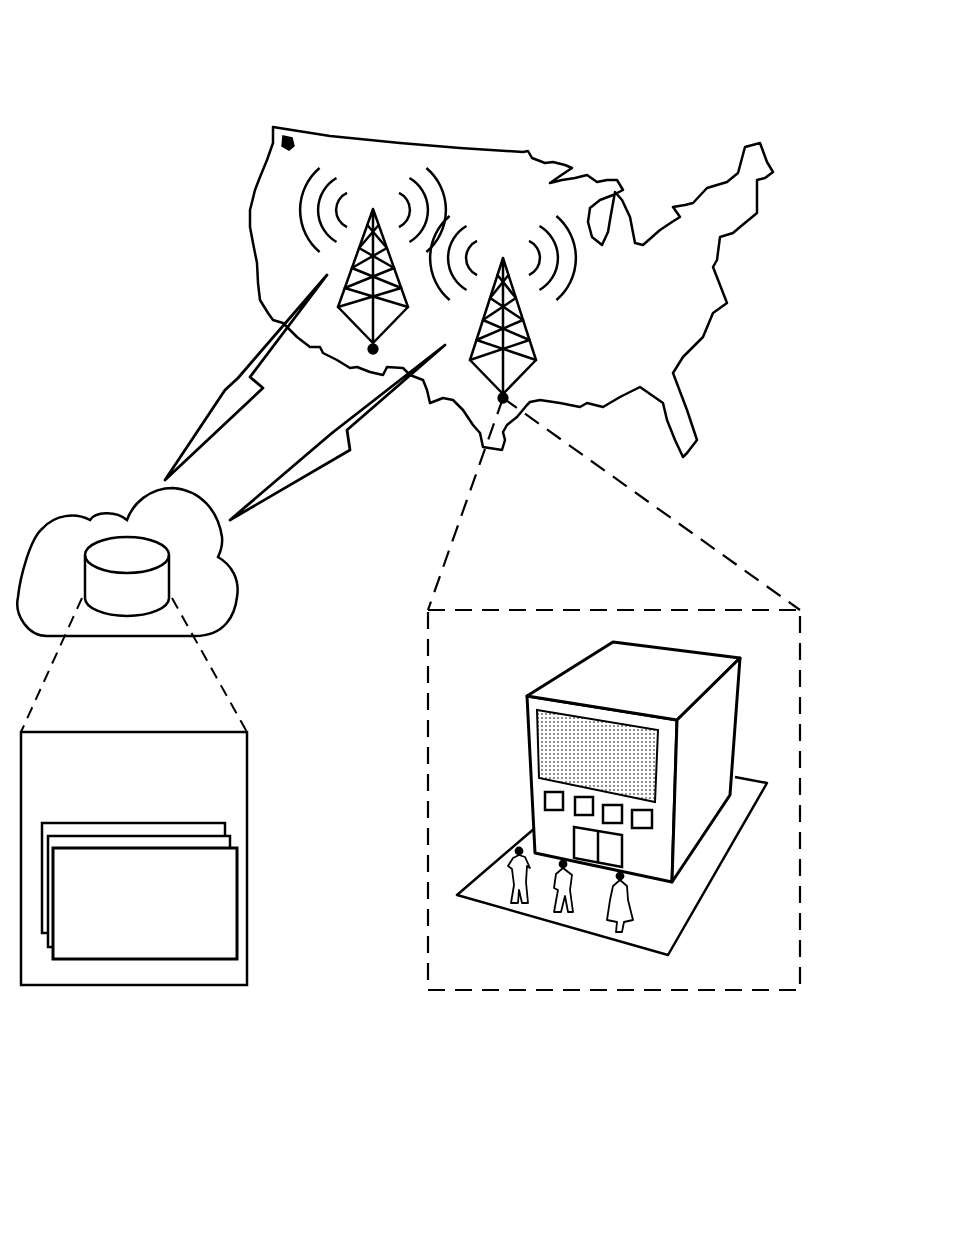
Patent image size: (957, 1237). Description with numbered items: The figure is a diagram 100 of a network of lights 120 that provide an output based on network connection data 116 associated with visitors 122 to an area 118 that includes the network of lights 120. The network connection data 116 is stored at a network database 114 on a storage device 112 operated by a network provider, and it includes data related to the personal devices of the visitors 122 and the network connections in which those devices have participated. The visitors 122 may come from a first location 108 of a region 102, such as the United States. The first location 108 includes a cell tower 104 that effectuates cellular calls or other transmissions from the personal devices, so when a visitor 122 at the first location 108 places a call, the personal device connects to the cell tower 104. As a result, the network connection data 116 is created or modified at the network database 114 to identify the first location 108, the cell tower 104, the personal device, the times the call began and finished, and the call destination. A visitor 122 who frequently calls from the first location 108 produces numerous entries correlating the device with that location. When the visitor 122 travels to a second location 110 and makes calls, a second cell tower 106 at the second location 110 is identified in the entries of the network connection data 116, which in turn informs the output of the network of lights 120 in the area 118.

The diagram 100 is at (112, 72).
The region 102 is at (292, 141).
The cell tower 104 is at (373, 207).
The second cell tower 106 is at (503, 256).
The first location 108 is at (371, 352).
The second location 110 is at (501, 401).
The storage device 112 is at (127, 562).
The network database 114 is at (134, 858).
The network connection data 116 is at (139, 891).
The area 118 is at (462, 838).
The network of lights 120 is at (565, 762).
The visitors 122 is at (611, 931).